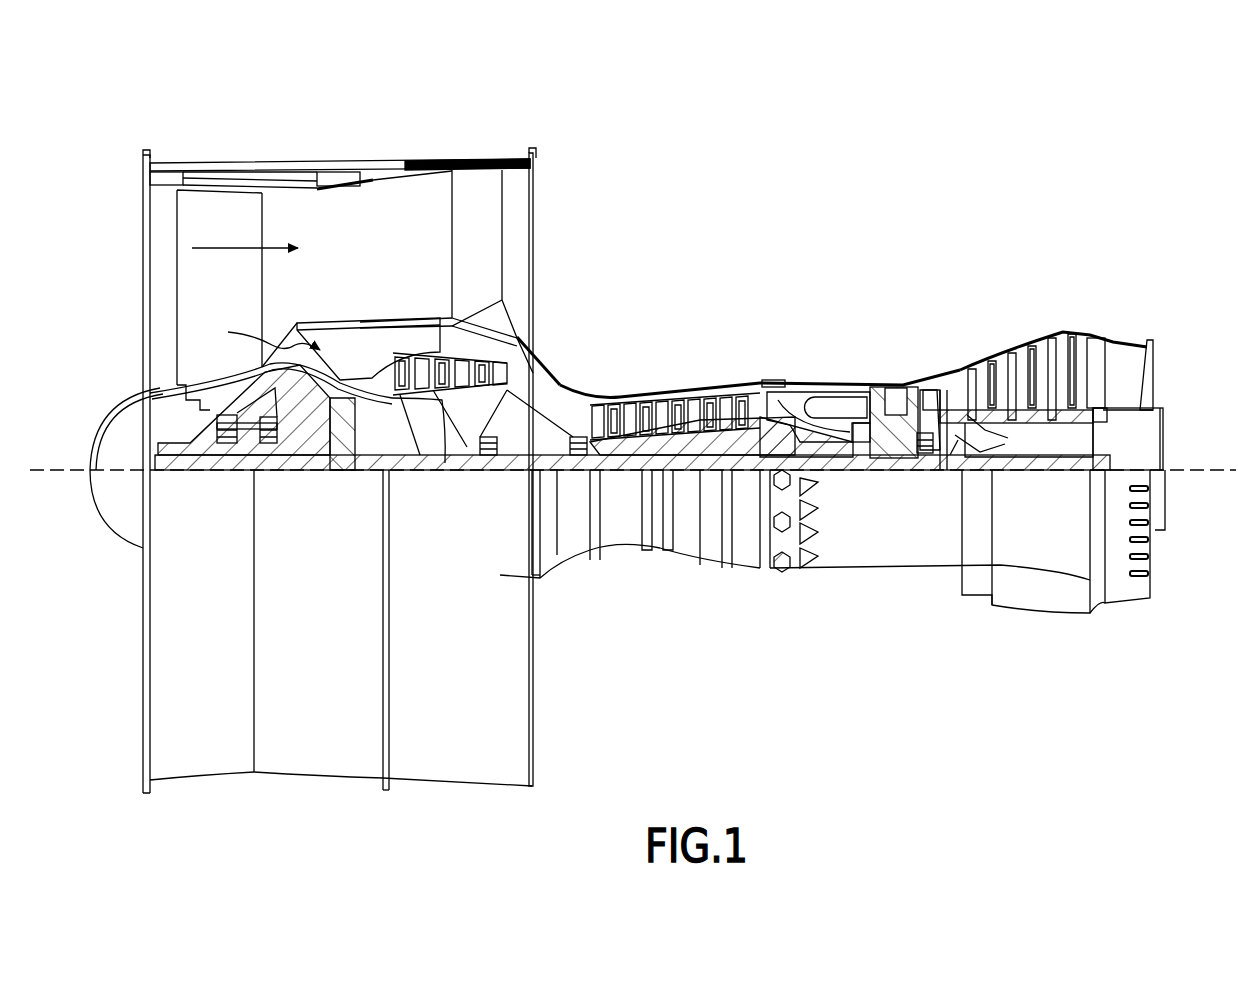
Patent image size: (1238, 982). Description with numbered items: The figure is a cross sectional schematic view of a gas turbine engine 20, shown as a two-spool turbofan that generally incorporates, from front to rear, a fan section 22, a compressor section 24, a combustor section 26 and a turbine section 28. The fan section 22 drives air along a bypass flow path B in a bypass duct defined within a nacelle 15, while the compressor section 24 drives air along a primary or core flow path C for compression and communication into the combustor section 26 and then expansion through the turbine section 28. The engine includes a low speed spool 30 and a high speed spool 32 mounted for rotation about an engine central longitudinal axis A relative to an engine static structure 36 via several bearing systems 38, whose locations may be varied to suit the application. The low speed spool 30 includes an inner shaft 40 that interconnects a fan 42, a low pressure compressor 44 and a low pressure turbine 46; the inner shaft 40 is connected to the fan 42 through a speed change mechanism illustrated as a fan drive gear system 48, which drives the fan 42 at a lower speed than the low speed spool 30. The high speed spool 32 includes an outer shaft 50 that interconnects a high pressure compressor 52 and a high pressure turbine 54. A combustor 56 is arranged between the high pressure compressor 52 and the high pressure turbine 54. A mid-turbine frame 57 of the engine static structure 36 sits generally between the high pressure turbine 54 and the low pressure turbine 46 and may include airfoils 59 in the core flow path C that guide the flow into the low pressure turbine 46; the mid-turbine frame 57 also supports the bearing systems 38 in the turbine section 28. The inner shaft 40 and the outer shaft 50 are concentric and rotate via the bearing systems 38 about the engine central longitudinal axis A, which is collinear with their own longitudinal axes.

The gas turbine engine 20 is at (852, 178).
The fan section 22 is at (250, 135).
The compressor section 24 is at (582, 358).
The combustor section 26 is at (824, 344).
The turbine section 28 is at (982, 312).
The nacelle 15 is at (330, 178).
The fan 42 is at (228, 284).
The low pressure compressor 44 is at (505, 362).
The low pressure turbine 46 is at (1032, 366).
The fan drive gear system 48 is at (346, 467).
The low speed spool 30 is at (696, 480).
The high speed spool 32 is at (750, 390).
The engine static structure 36 is at (742, 545).
The bearing systems 38 is at (492, 471).
The inner shaft 40 is at (562, 500).
The outer shaft 50 is at (812, 450).
The high pressure compressor 52 is at (694, 400).
The high pressure turbine 54 is at (890, 384).
The combustor 56 is at (834, 406).
The mid-turbine frame 57 is at (938, 366).
The airfoils 59 is at (994, 435).
The engine central longitudinal axis A is at (1210, 466).
The bypass flow path B is at (224, 248).
The core flow path C is at (262, 333).